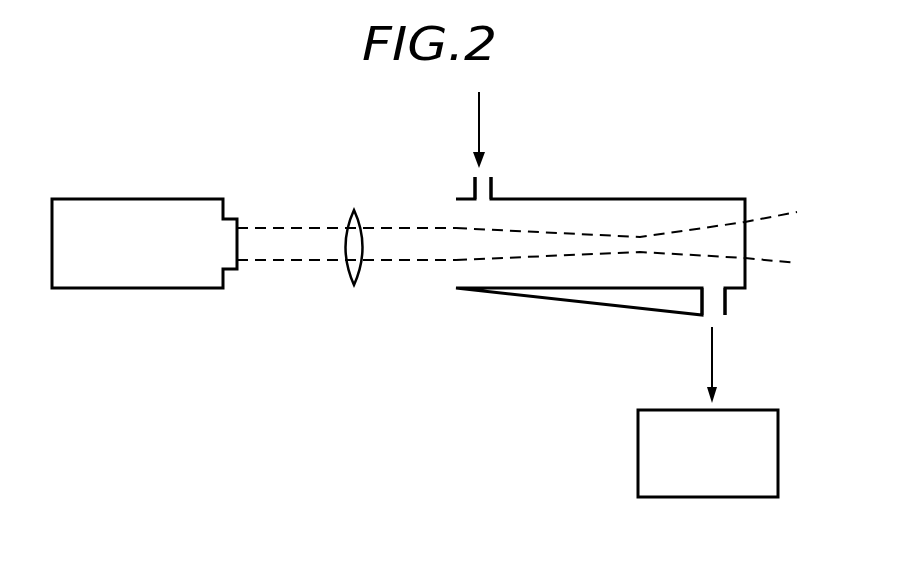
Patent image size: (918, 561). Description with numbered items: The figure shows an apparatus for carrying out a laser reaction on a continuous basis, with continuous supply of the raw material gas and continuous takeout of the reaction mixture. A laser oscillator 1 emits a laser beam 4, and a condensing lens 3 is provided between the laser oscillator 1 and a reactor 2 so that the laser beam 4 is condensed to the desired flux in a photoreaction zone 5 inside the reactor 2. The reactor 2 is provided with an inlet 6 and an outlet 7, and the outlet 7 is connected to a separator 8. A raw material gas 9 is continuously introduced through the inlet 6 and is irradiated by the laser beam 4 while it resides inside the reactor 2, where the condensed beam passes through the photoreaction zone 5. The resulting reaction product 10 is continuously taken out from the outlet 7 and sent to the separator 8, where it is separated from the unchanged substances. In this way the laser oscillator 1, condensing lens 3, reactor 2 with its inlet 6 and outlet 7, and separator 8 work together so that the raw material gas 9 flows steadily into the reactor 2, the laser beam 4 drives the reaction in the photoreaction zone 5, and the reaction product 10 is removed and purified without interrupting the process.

The laser oscillator 1 is at (91, 203).
The reactor 2 is at (567, 199).
The condensing lens 3 is at (350, 212).
The laser beam 4 is at (285, 262).
The photoreaction zone 5 is at (630, 222).
The inlet 6 is at (474, 190).
The outlet 7 is at (729, 302).
The separator 8 is at (767, 445).
The raw material gas 9 is at (481, 122).
The reaction product 10 is at (712, 361).